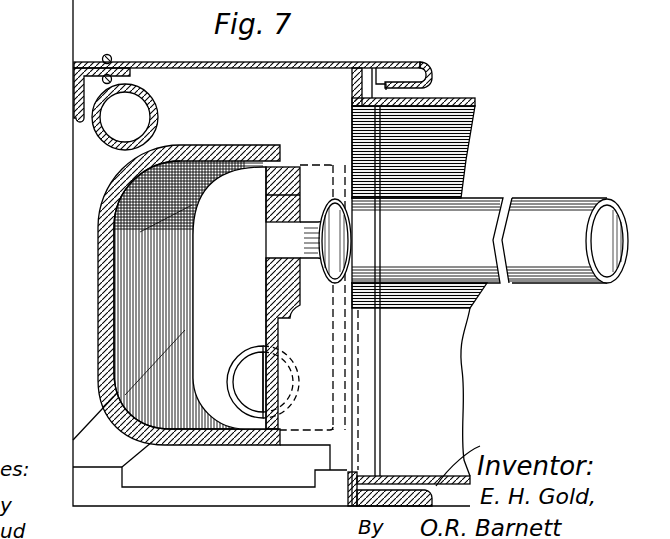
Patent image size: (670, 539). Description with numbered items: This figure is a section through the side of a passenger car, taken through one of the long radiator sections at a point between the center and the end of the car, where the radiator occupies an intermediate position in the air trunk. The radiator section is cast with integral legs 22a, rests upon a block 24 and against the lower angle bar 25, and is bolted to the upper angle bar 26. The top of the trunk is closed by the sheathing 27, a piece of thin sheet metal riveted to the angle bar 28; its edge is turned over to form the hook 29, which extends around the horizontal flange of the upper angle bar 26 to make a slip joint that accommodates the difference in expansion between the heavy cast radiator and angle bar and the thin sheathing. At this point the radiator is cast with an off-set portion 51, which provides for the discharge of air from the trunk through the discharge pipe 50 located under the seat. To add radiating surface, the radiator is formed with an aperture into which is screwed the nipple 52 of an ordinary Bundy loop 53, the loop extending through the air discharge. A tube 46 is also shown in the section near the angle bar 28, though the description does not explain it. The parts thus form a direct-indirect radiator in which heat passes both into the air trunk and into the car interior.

The integral legs 22a is at (100, 432).
The blocks 24 is at (333, 490).
The lower angle bar 25 is at (372, 452).
The upper angle bar 26 is at (450, 120).
The sheathing 27 is at (228, 58).
The angle bar 28 is at (74, 88).
The hook 29 is at (428, 80).
The tube 46 is at (158, 112).
The discharge pipes 50 is at (470, 462).
The off-set portions 51 is at (182, 150).
The nipple 52 is at (268, 262).
The Bundy loop 53 is at (514, 208).